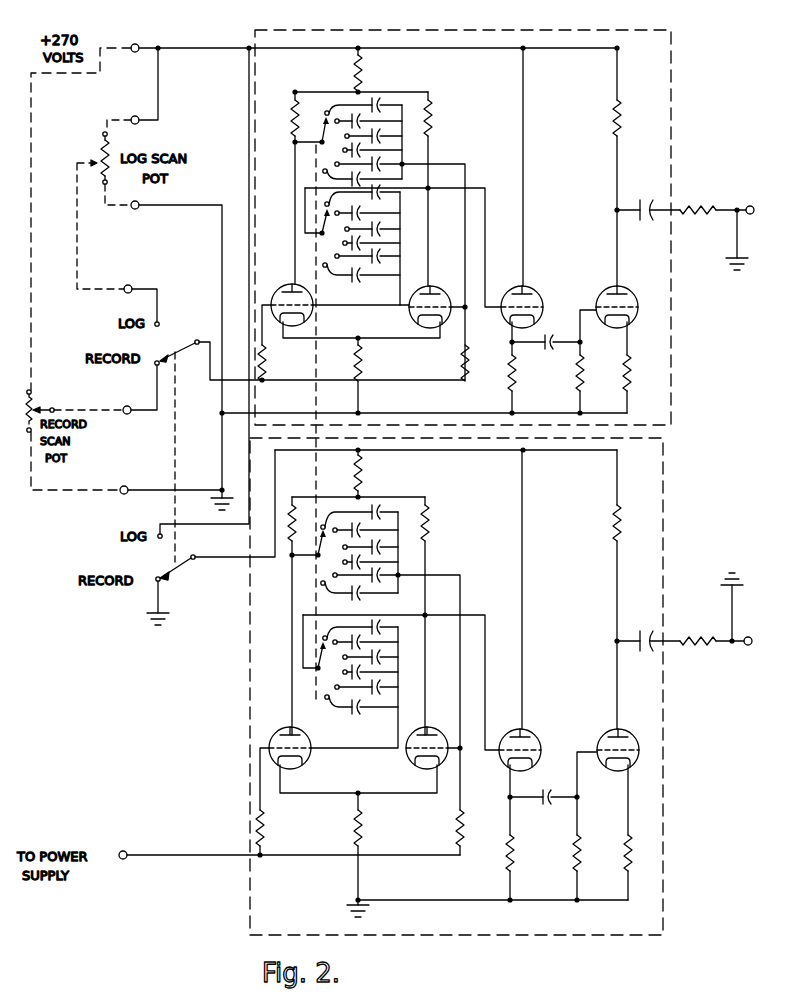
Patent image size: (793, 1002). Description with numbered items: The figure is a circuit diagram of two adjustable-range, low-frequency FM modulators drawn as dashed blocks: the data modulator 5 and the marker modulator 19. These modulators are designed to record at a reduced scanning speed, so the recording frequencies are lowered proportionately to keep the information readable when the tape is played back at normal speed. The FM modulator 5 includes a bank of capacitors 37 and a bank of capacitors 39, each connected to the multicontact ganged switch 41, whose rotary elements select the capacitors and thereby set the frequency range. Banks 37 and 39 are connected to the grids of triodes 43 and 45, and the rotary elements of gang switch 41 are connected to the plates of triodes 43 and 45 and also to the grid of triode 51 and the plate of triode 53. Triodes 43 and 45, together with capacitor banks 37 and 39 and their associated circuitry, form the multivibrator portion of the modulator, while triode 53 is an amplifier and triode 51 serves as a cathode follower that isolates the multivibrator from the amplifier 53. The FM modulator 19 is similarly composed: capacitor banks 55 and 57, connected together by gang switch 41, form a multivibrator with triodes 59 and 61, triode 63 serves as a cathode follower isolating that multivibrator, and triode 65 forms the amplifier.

The FM modulator 5 is at (670, 94).
The FM modulator 19 is at (663, 804).
The bank of capacitors 37 is at (409, 140).
The bank of capacitors 39 is at (401, 232).
The multicontact ganged switch 41 is at (317, 150).
The triode 43 is at (288, 284).
The triode 45 is at (432, 286).
The triode 51 is at (530, 284).
The triode 53 is at (627, 284).
The bank of capacitors 55 is at (396, 554).
The bank of capacitors 57 is at (401, 664).
The triode 59 is at (282, 727).
The triode 61 is at (430, 728).
The triode 63 is at (528, 724).
The triode 65 is at (616, 728).